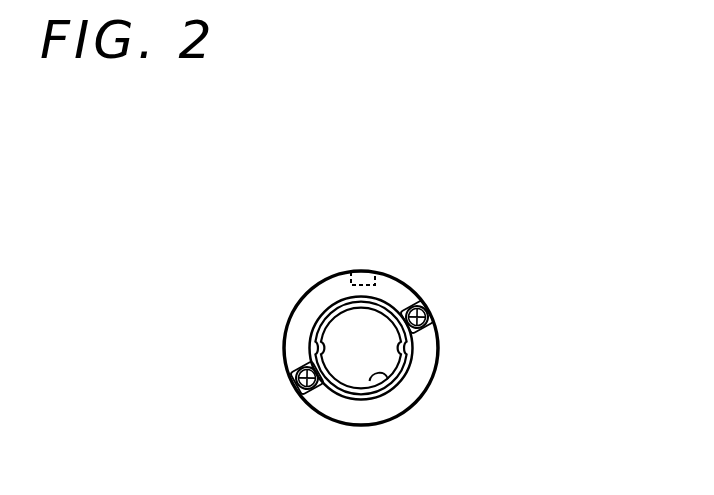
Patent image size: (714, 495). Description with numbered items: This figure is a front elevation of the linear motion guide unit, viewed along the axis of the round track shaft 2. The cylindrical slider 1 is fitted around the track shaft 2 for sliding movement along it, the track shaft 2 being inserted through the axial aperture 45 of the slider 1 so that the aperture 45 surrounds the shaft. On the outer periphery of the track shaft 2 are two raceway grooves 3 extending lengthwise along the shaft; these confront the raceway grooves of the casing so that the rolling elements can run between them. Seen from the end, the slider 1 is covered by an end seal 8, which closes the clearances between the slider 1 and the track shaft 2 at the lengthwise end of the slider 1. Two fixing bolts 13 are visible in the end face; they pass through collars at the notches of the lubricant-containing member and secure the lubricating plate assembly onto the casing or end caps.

The slider 1 is at (382, 268).
The track shaft 2 is at (352, 370).
The raceway grooves 3 is at (405, 346).
The end seal 8 is at (413, 387).
The fixing bolts 13 is at (427, 305).
The axial aperture 45 is at (377, 374).